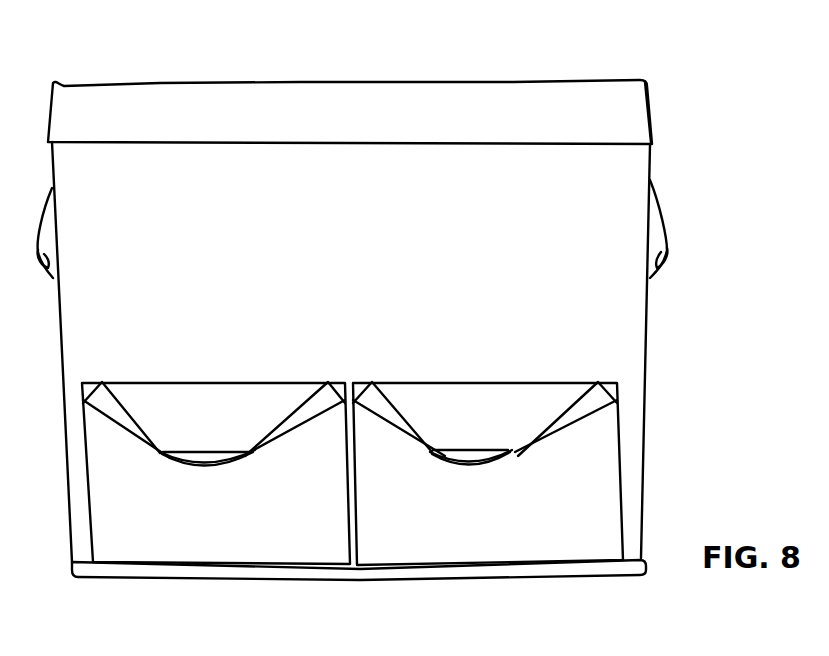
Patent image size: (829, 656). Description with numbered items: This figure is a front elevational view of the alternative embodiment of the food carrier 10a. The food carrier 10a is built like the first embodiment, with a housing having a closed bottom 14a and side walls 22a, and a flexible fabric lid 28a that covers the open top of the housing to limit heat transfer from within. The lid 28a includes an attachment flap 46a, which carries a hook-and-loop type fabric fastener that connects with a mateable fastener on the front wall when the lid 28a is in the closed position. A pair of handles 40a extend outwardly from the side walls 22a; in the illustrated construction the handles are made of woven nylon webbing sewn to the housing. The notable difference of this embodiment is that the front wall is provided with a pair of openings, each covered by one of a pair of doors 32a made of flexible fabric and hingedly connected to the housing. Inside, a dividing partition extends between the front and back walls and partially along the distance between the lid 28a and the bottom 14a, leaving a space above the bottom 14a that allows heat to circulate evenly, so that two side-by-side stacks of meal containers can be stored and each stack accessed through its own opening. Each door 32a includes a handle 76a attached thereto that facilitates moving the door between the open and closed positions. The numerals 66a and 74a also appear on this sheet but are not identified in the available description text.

The food carrier 10a is at (662, 80).
The bottom 14a is at (578, 578).
The side walls 22a is at (652, 322).
The lid 28a is at (513, 82).
The doors 32a is at (622, 475).
The handles 40a is at (666, 226).
The attachment flap 46a is at (638, 120).
The pocket element 66a is at (61, 6).
The pocket element 74a is at (214, 6).
The handle 76a is at (598, 398).